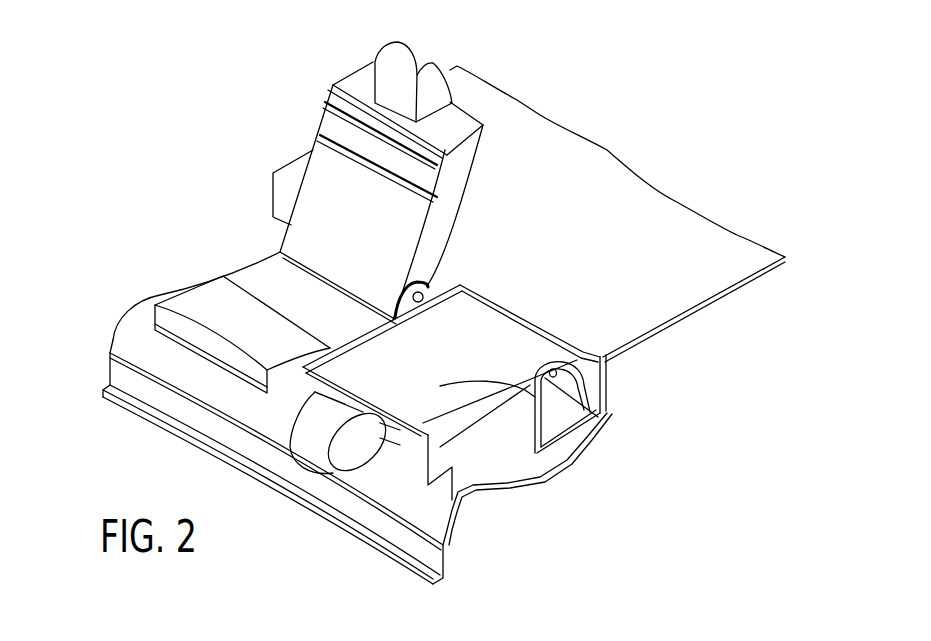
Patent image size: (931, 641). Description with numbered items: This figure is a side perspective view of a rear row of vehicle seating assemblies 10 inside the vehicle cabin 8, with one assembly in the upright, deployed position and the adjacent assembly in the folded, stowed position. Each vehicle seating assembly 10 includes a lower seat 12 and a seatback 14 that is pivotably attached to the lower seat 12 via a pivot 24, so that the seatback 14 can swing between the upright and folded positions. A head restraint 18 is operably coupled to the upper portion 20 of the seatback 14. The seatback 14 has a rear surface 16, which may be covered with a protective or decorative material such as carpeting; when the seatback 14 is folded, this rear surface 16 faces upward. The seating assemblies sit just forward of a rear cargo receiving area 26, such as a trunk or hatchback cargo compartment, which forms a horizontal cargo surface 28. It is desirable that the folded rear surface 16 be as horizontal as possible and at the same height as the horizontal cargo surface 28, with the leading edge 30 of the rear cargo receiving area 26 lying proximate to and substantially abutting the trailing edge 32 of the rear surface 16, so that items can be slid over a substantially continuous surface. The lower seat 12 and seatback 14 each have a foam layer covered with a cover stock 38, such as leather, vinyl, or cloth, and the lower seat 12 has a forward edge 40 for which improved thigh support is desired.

The vehicle cabin 8 is at (133, 245).
The vehicle seating assembly 10 is at (262, 292).
The lower seat 12 is at (215, 353).
The seatback 14 is at (303, 213).
The rear surface 16 is at (568, 455).
The head restraint 18 is at (408, 66).
The upper portion 20 is at (574, 322).
The pivot 24 is at (606, 410).
The rear cargo receiving area 26 is at (717, 267).
The horizontal cargo surface 28 is at (642, 200).
The leading edge 30 is at (606, 375).
The trailing edge 32 is at (500, 307).
The cover stock 38 is at (320, 178).
The forward edge 40 is at (118, 321).